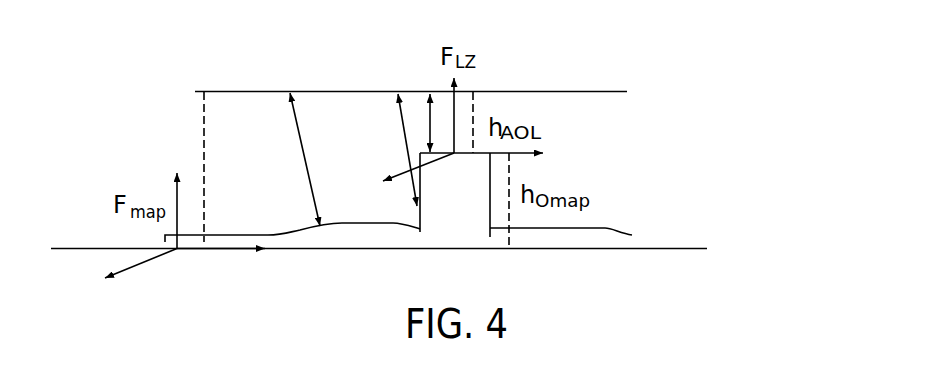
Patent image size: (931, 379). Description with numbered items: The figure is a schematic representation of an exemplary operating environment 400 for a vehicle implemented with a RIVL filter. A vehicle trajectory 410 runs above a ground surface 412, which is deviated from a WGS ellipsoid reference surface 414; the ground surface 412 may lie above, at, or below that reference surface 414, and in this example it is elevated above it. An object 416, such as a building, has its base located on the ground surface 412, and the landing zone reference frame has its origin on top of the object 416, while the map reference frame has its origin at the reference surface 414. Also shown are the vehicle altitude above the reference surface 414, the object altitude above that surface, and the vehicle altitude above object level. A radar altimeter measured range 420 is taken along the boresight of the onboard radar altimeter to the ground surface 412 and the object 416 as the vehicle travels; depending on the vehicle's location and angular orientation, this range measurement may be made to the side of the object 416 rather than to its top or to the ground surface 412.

The operating environment 400 is at (138, 40).
The vehicle trajectory 410 is at (548, 91).
The ground surface 412 is at (605, 228).
The WGS-84 surface 414 is at (687, 248).
The object 416 is at (421, 167).
The radar altimeter measured range 420 is at (430, 123).